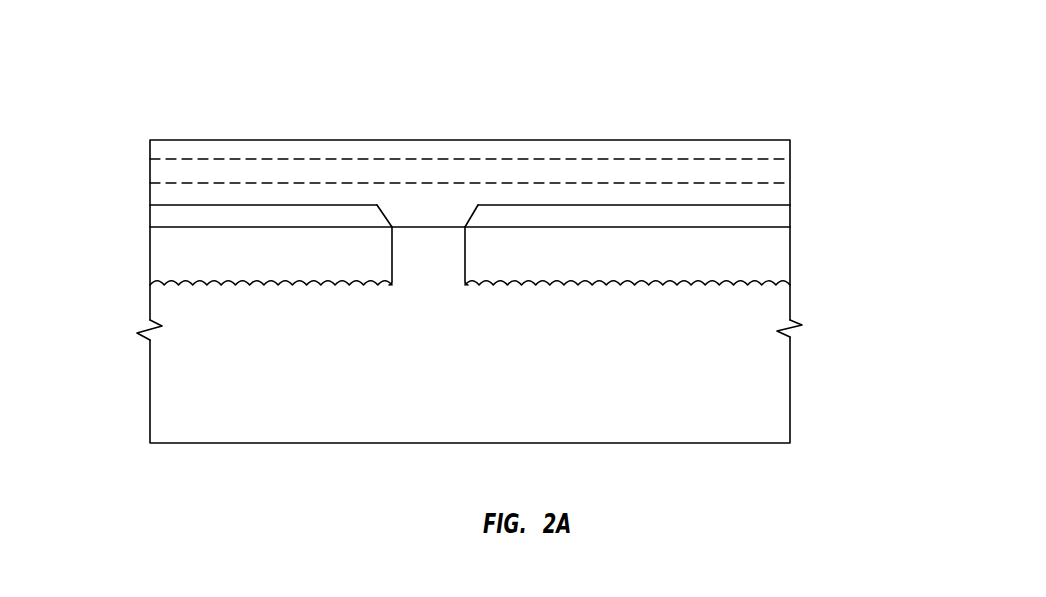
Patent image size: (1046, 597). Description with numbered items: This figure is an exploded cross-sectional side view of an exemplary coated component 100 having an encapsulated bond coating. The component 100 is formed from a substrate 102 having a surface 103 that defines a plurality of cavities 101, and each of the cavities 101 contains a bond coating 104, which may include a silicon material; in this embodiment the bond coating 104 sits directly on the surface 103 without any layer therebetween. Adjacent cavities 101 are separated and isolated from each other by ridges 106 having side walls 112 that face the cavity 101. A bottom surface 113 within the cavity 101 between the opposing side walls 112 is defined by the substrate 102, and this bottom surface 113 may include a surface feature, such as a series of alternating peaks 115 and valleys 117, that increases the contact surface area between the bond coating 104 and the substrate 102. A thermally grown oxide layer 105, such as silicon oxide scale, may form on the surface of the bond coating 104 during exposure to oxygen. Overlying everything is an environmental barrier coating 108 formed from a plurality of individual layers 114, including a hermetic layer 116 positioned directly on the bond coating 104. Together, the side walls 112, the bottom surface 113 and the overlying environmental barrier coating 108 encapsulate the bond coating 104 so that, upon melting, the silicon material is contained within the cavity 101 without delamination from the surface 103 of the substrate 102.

The coated component 100 is at (170, 76).
The cavities 101 is at (303, 250).
The substrate 102 is at (393, 428).
The surface 103 is at (422, 215).
The bond coating 104 is at (338, 263).
The thermally grown oxide layer 105 is at (225, 217).
The ridges 106 is at (441, 243).
The environmental barrier coating 108 is at (662, 148).
The side walls 112 is at (383, 243).
The bottom surface 113 is at (248, 273).
The individual layers 114 is at (172, 148).
The peaks 115 is at (598, 277).
The hermetic layer 116 is at (165, 194).
The valleys 117 is at (556, 277).